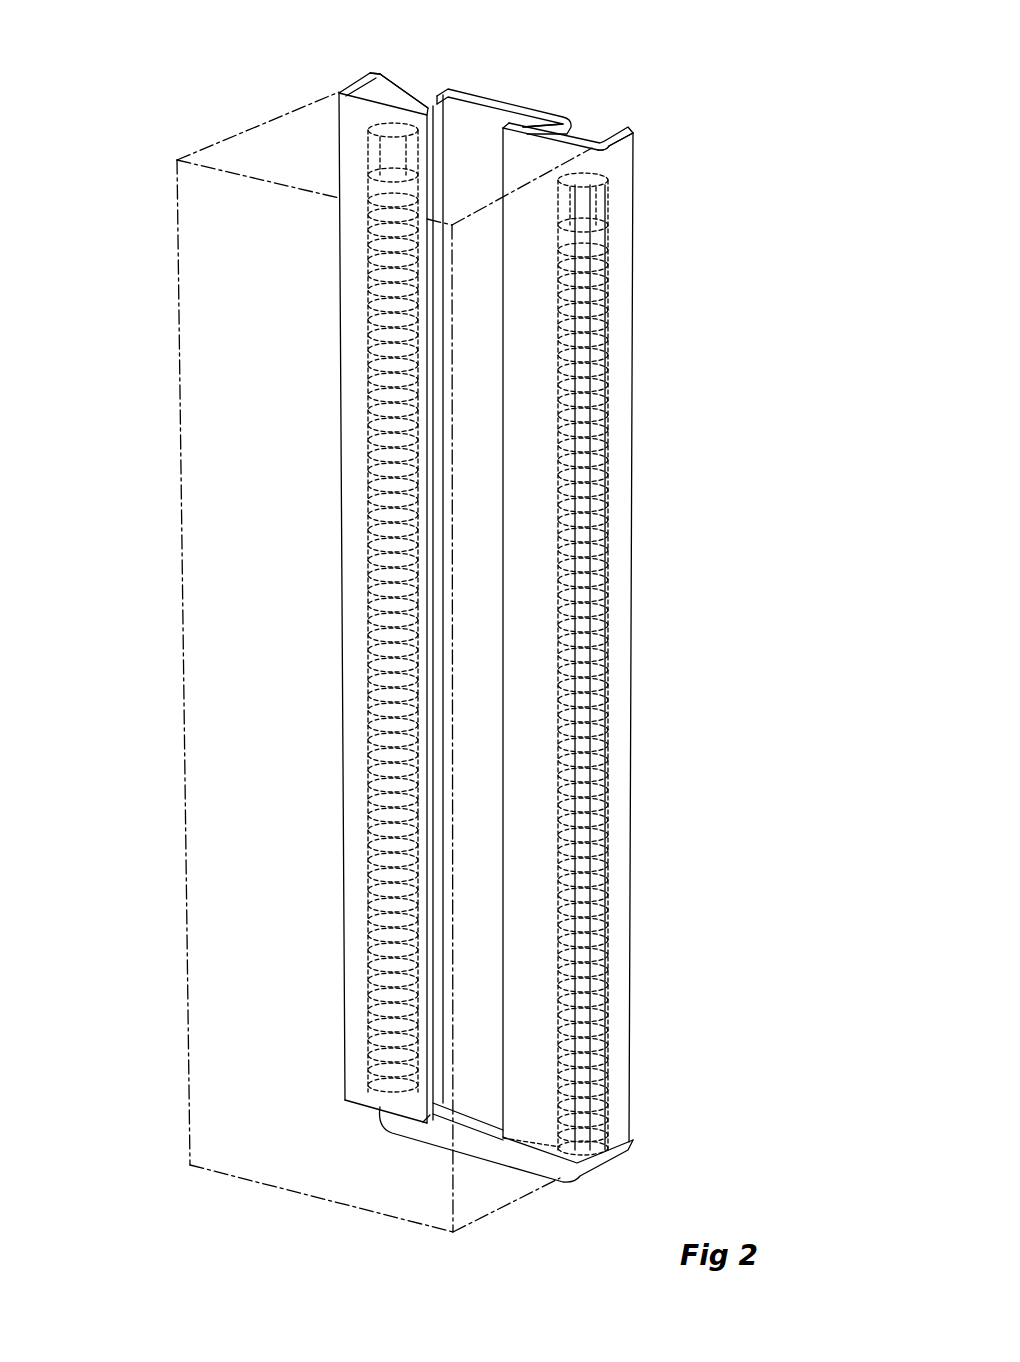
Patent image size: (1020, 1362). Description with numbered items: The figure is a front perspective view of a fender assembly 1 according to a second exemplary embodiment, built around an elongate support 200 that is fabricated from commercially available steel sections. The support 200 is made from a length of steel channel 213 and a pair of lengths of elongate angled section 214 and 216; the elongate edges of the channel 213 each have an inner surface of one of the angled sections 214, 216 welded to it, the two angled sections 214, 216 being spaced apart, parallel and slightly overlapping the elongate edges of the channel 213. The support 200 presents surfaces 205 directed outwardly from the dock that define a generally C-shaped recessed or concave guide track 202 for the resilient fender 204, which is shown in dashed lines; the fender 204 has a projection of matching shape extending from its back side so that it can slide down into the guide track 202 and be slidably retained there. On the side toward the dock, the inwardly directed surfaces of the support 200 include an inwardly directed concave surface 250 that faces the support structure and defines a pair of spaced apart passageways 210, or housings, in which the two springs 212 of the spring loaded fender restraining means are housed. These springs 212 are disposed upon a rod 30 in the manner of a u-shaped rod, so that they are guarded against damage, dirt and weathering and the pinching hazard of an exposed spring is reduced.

The battery module 1 is at (135, 122).
The rod 30 is at (473, 583).
The elongate support 200 is at (502, 94).
The guide track 202 is at (487, 1085).
The resilient fender 204 is at (205, 258).
The outwardly directed surfaces 205 is at (520, 265).
The passageways 210 is at (416, 95).
The springs 212 is at (610, 389).
The steel channel 213 is at (525, 108).
The angled section 214 is at (357, 86).
The angled section 216 is at (633, 288).
The inwardly directed concave surface 250 is at (389, 93).